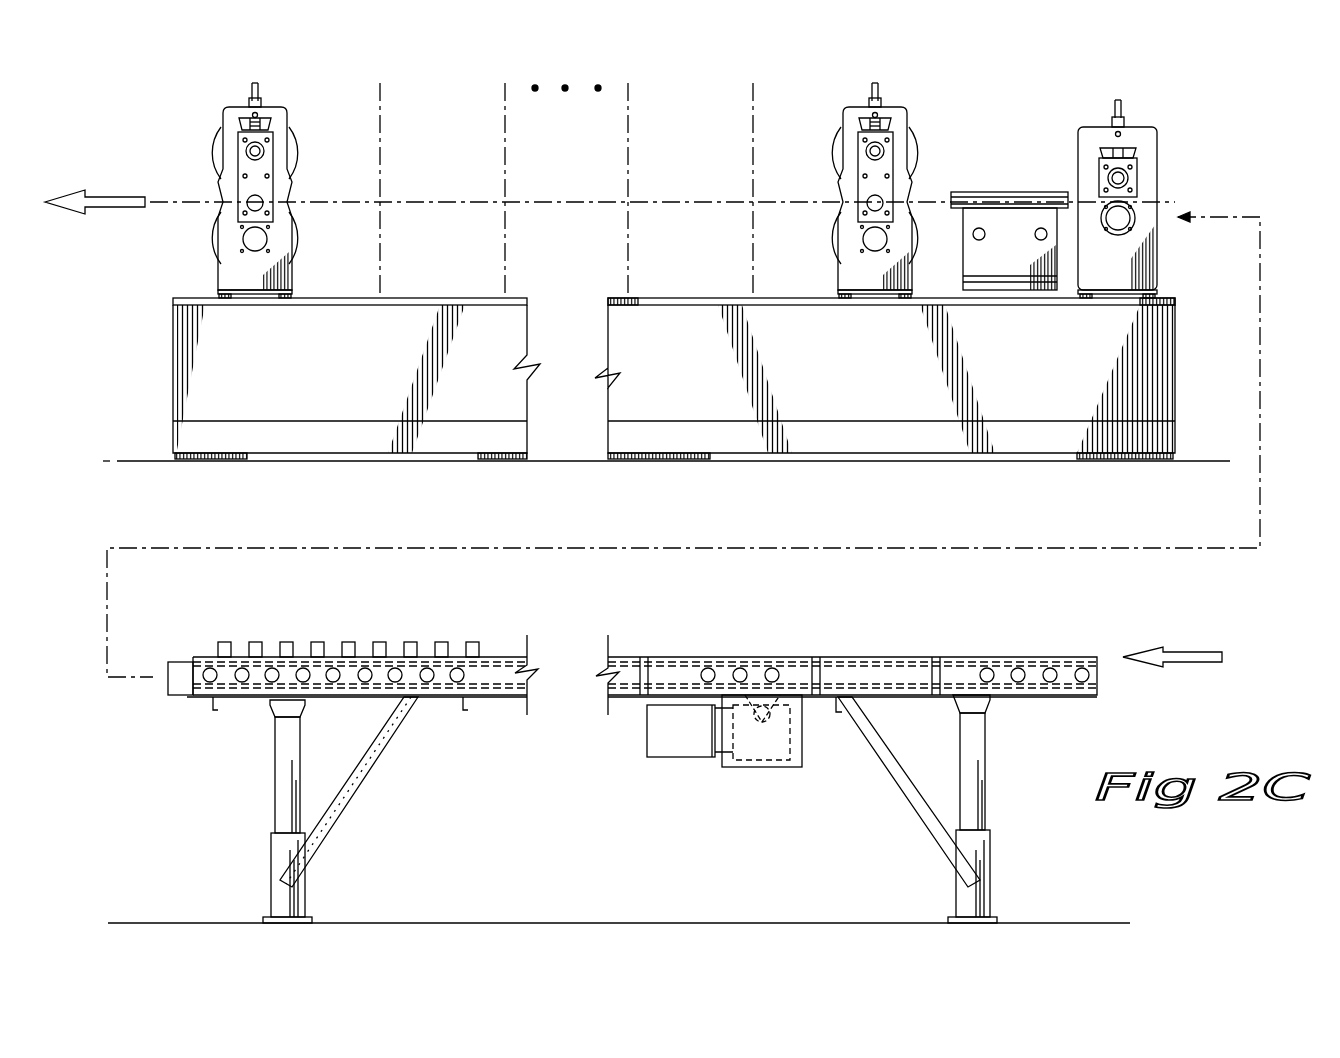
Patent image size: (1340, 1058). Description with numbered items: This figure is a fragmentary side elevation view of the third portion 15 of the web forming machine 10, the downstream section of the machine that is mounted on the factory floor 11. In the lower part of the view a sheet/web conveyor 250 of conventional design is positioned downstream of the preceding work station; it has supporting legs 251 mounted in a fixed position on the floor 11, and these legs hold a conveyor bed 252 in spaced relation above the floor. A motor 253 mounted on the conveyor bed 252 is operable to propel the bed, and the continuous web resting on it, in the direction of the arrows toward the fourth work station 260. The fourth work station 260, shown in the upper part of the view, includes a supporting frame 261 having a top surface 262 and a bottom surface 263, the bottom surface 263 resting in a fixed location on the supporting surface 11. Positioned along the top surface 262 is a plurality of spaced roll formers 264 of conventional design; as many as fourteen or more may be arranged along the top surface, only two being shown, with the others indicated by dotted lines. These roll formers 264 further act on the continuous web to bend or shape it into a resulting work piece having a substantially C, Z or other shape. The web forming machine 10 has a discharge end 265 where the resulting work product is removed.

The web forming machine 10 is at (1254, 110).
The factory floor 11 is at (1197, 457).
The third portion 15 is at (937, 117).
The sheet/web conveyor 250 is at (819, 618).
The supporting legs 251 is at (280, 788).
The conveyor bed 252 is at (630, 698).
The motor 253 is at (678, 743).
The fourth work station 260 is at (672, 108).
The supporting frame 261 is at (865, 359).
The top surface 262 is at (670, 297).
The bottom surface 263 is at (815, 452).
The roll formers 264 is at (263, 124).
The discharge end 265 is at (187, 297).